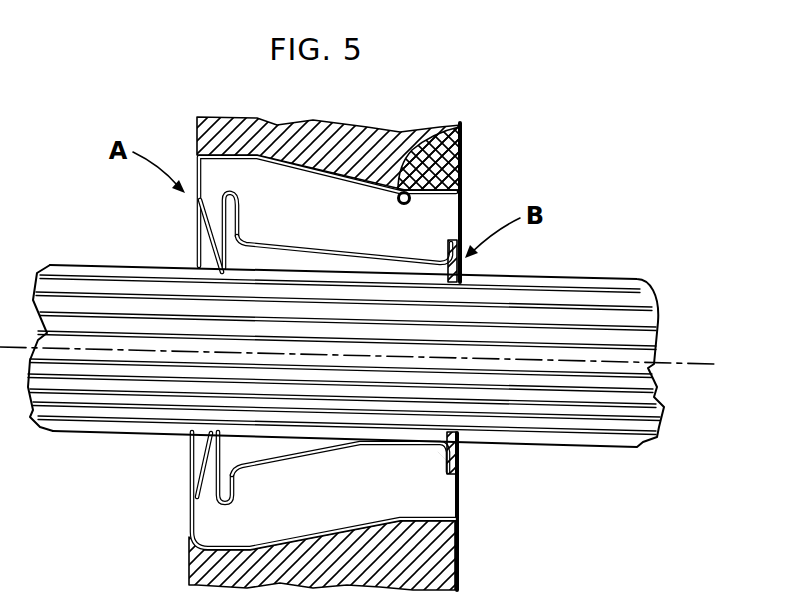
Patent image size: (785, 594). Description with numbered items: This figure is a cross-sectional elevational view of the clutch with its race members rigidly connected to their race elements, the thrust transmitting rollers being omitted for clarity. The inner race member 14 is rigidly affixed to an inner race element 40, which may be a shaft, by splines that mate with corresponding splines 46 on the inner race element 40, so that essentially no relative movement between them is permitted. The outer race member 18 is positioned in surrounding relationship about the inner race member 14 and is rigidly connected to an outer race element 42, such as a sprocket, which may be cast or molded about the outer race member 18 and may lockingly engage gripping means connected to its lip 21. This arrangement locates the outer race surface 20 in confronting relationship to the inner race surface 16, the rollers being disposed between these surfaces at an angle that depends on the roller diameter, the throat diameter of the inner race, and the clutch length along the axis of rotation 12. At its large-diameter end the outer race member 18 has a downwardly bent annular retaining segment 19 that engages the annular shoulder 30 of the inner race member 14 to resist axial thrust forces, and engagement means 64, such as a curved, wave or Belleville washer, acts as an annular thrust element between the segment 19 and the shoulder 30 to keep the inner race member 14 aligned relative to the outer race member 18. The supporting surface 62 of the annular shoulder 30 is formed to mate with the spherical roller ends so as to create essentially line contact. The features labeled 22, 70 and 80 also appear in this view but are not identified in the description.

The axis of rotation 12 is at (677, 363).
The inner race member 14 is at (217, 453).
The inner race surface 16 is at (282, 252).
The outer race member 18 is at (283, 122).
The annular retaining segment 19 is at (198, 203).
The outer race surface 20 is at (463, 126).
The lip 21 is at (462, 167).
The casing radial flange 22 is at (438, 217).
The annular shoulder 30 is at (233, 502).
The inner race element 40 is at (573, 297).
The outer race element 42 is at (390, 145).
The splines 46 is at (97, 263).
The supporting surface 62 is at (237, 483).
The engagement means 64 is at (197, 207).
The garter spring 70 is at (462, 272).
The casing curl 80 is at (446, 263).